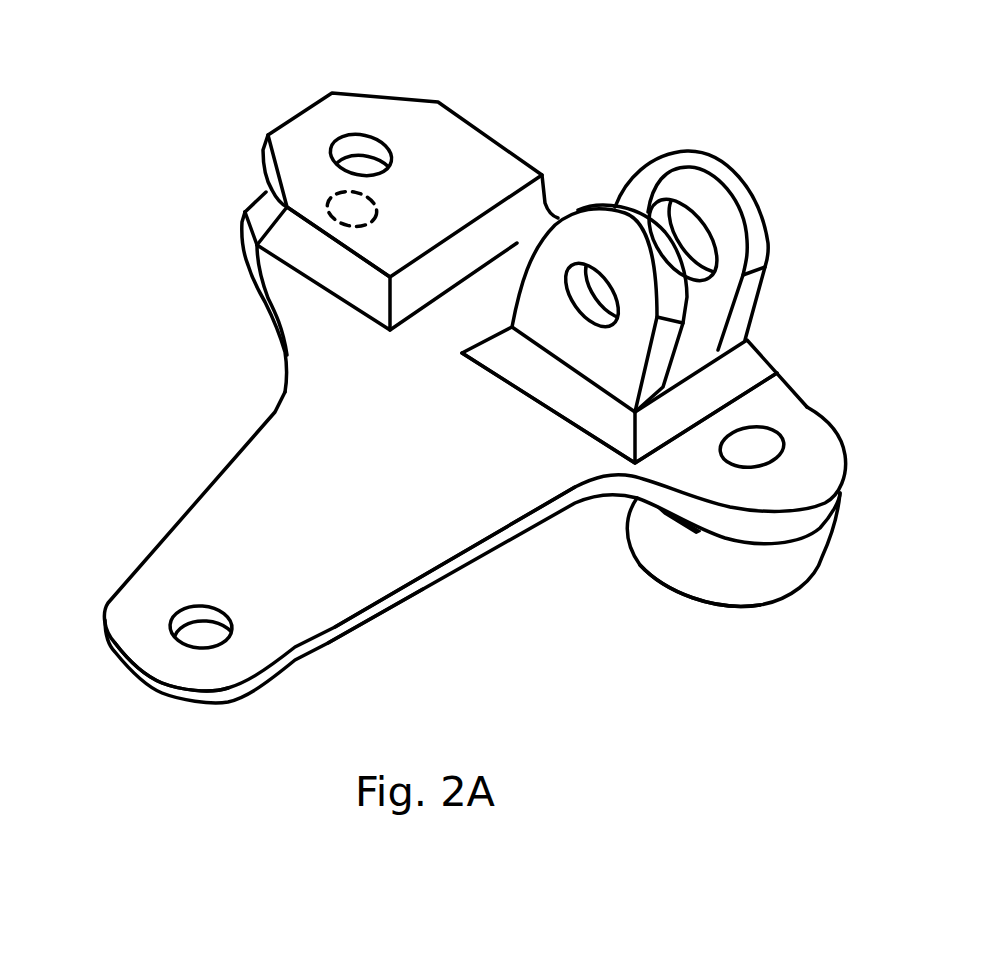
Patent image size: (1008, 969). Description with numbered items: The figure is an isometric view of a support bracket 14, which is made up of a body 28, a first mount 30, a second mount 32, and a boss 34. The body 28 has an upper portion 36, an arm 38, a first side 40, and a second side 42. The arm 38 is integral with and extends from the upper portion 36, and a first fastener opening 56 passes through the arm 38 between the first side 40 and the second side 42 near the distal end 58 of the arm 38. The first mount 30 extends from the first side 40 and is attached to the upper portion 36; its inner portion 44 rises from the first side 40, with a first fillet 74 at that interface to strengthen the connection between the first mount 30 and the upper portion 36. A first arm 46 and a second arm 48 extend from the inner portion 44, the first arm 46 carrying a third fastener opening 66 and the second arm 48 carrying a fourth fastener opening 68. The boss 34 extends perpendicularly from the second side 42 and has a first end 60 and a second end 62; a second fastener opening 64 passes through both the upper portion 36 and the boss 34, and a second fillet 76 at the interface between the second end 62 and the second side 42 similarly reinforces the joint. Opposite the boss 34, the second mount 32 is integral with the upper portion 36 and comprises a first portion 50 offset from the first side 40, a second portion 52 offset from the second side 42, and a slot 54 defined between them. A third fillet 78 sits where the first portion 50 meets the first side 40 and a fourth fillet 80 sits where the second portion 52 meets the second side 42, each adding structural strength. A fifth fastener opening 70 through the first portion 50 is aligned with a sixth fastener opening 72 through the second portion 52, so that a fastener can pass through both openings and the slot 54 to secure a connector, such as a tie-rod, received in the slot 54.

The support bracket 14 is at (127, 204).
The body 28 is at (398, 384).
The first mount 30 is at (766, 206).
The second mount 32 is at (346, 88).
The boss 34 is at (733, 610).
The upper portion 36 is at (500, 292).
The arm 38 is at (340, 567).
The first side 40 is at (474, 547).
The second side 42 is at (333, 657).
The inner portion 44 is at (690, 357).
The first arm 46 is at (720, 182).
The second arm 48 is at (627, 237).
The first portion 50 is at (408, 133).
The second portion 52 is at (258, 220).
The slot 54 is at (260, 175).
The first fastener opening 56 is at (210, 633).
The distal end 58 is at (138, 670).
The first end 60 is at (783, 600).
The second end 62 is at (800, 553).
The second fastener opening 64 is at (748, 445).
The third fastener opening 66 is at (687, 230).
The fourth fastener opening 68 is at (590, 302).
The fifth fastener opening 70 is at (366, 138).
The sixth fastener opening 72 is at (337, 192).
The first fillet 74 is at (497, 342).
The second fillet 76 is at (680, 523).
The third fillet 78 is at (343, 280).
The fourth fillet 80 is at (262, 295).